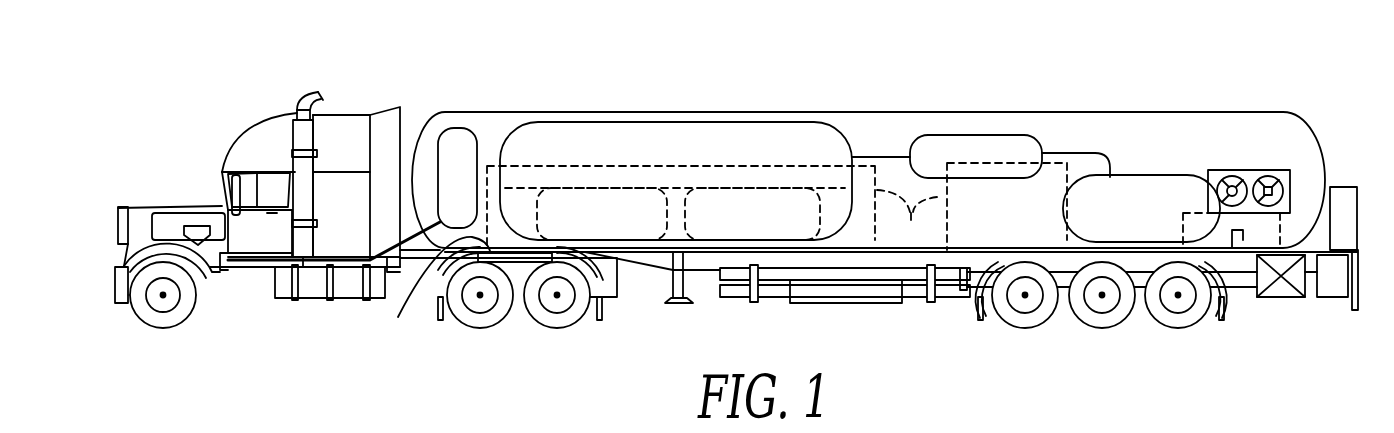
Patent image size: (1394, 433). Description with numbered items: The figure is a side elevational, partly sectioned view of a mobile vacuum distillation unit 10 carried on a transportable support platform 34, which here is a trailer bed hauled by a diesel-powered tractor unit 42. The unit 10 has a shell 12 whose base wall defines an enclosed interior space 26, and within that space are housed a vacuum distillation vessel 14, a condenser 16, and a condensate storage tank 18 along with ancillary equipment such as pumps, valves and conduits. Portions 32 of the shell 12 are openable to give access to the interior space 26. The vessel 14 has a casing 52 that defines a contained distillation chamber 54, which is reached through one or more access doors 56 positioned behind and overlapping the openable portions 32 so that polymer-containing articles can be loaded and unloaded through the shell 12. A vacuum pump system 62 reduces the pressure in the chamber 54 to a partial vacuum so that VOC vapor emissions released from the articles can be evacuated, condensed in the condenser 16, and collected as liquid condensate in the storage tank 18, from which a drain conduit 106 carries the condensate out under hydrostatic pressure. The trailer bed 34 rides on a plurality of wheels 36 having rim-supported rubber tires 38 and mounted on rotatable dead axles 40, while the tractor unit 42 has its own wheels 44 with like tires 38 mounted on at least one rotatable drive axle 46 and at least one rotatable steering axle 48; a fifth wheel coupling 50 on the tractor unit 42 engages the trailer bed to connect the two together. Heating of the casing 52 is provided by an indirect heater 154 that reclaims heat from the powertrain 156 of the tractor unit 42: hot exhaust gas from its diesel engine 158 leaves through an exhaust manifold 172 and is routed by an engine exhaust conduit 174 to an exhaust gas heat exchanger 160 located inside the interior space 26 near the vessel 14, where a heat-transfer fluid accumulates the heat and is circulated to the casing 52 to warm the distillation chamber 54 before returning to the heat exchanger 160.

The mobile vacuum distillation unit 10 is at (824, 215).
The shell 12 is at (824, 225).
The vacuum distillation vessel 14 is at (701, 153).
The condenser 16 is at (981, 129).
The condensate storage tank 18 is at (1141, 182).
The enclosed interior space 26 is at (868, 153).
The openable portions 32 is at (1078, 206).
The transportable support platform 34 is at (845, 300).
The wheels 36 is at (1093, 332).
The rim-supported rubber tires 38 is at (672, 321).
The rotatable dead axles 40 is at (1067, 280).
The diesel-powered tractor unit 42 is at (345, 205).
The wheels 44 is at (338, 328).
The rotatable drive axle 46 is at (193, 320).
The rotatable steering axle 48 is at (518, 330).
The fifth wheel coupling 50 is at (432, 288).
The casing 52 is at (482, 151).
The distillation chamber 54 is at (676, 181).
The access doors 56 is at (678, 217).
The vacuum pump system 62 is at (1234, 173).
The drain conduit 106 is at (1265, 283).
The indirect heater 154 is at (408, 143).
The powertrain 156 is at (147, 220).
The diesel engine 158 is at (166, 194).
The exhaust gas heat exchanger 160 is at (482, 151).
The exhaust manifold 172 is at (193, 191).
The engine exhaust conduit 174 is at (334, 226).